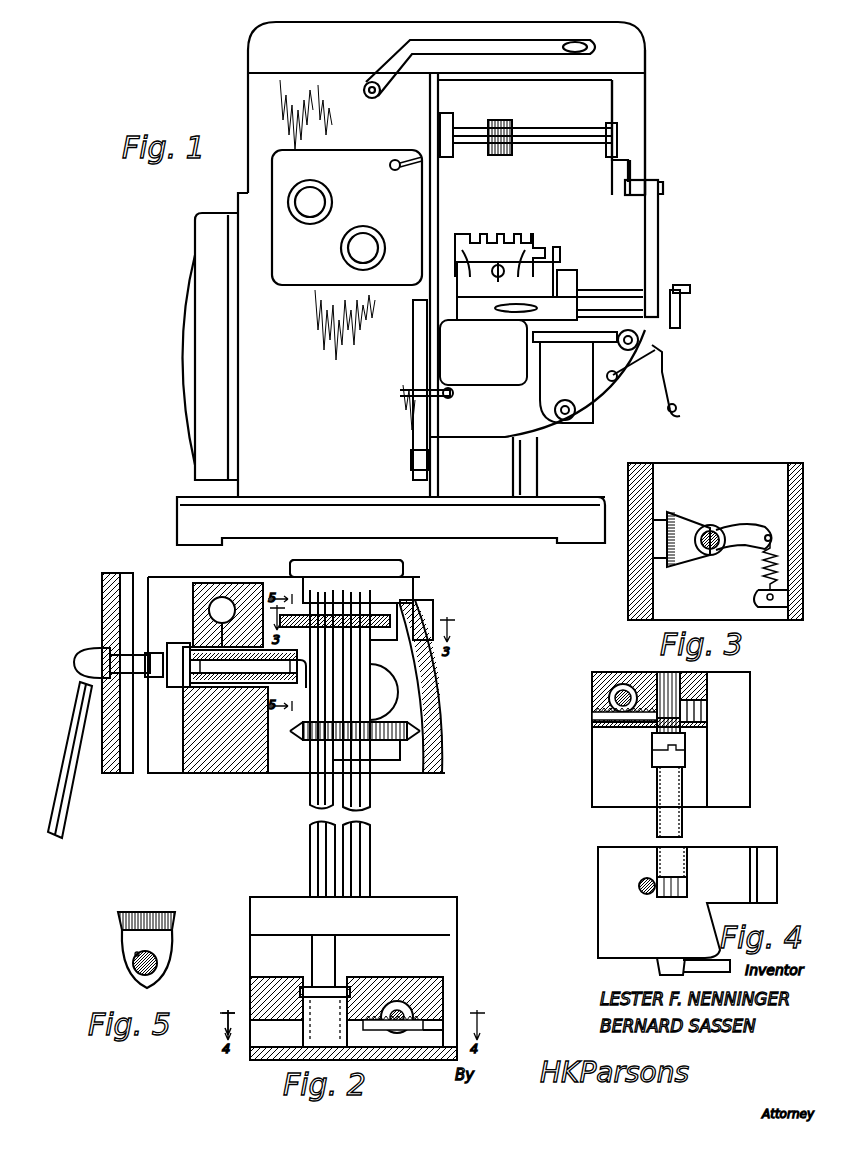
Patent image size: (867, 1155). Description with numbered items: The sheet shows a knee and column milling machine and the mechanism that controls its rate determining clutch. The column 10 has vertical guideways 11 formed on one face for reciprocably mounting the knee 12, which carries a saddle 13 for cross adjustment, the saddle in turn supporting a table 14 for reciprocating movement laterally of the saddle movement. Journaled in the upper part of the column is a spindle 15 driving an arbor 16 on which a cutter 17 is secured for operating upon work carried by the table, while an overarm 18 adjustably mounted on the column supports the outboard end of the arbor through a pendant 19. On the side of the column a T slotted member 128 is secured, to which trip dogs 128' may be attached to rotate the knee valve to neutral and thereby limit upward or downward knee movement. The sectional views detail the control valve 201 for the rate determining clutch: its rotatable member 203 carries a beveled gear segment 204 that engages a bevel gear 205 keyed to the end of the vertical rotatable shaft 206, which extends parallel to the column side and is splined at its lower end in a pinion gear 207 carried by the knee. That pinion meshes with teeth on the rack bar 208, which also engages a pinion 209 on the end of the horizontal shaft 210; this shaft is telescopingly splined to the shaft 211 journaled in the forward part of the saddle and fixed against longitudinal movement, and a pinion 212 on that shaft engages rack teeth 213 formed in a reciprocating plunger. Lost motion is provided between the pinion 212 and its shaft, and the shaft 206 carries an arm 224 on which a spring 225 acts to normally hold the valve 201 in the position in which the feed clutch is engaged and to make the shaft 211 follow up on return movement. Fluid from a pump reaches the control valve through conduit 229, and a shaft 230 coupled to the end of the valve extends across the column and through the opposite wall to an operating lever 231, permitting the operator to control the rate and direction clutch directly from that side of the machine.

In FIG. 1, the column 10 is at (391, 476).
In FIG. 1, the vertical guideways 11 is at (440, 196).
In FIG. 1, the knee 12 is at (610, 406).
In FIG. 1, the saddle 13 is at (553, 265).
In FIG. 1, the table 14 is at (545, 233).
In FIG. 1, the spindle 15 is at (447, 114).
In FIG. 1, the arbor 16 is at (478, 126).
In FIG. 1, the cutter 17 is at (509, 120).
In FIG. 1, the overarm 18 is at (492, 34).
In FIG. 1, the pendant 19 is at (640, 105).
In FIG. 1, the T slotted member 128 is at (409, 390).
In FIG. 1, the trip dogs 128' is at (397, 463).
In FIG. 2, the control valve 201 is at (193, 700).
In FIG. 5, the rotatable member 203 is at (134, 965).
In FIG. 2, the rotatable member 203 is at (292, 685).
In FIG. 5, the beveled gear segment 204 is at (168, 913).
In FIG. 2, the beveled gear segment 204 is at (300, 615).
In FIG. 3, the bevel gear 205 is at (690, 530).
In FIG. 2, the bevel gear 205 is at (290, 600).
In FIG. 4, the vertical rotatable shaft 206 is at (653, 672).
In FIG. 2, the vertical rotatable shaft 206 is at (318, 862).
In FIG. 4, the pinion gear 207 is at (609, 690).
In FIG. 4, the rack bar 208 is at (612, 714).
In FIG. 2, the rack bar 208 is at (395, 1050).
In FIG. 4, the pinion 209 is at (700, 720).
In FIG. 2, the pinion 209 is at (410, 1012).
In FIG. 4, the horizontal shaft 210 is at (657, 788).
In FIG. 2, the horizontal shaft 210 is at (447, 1017).
In FIG. 4, the shaft 211 is at (665, 862).
In FIG. 4, the pinion 212 is at (688, 880).
In FIG. 4, the rack teeth 213 is at (639, 886).
In FIG. 3, the arm 224 is at (753, 528).
In FIG. 3, the spring 225 is at (765, 568).
In FIG. 2, the conduit 229 is at (308, 680).
In FIG. 2, the shaft 230 is at (110, 655).
In FIG. 1, the operating lever 231 is at (408, 150).
In FIG. 2, the operating lever 231 is at (78, 812).